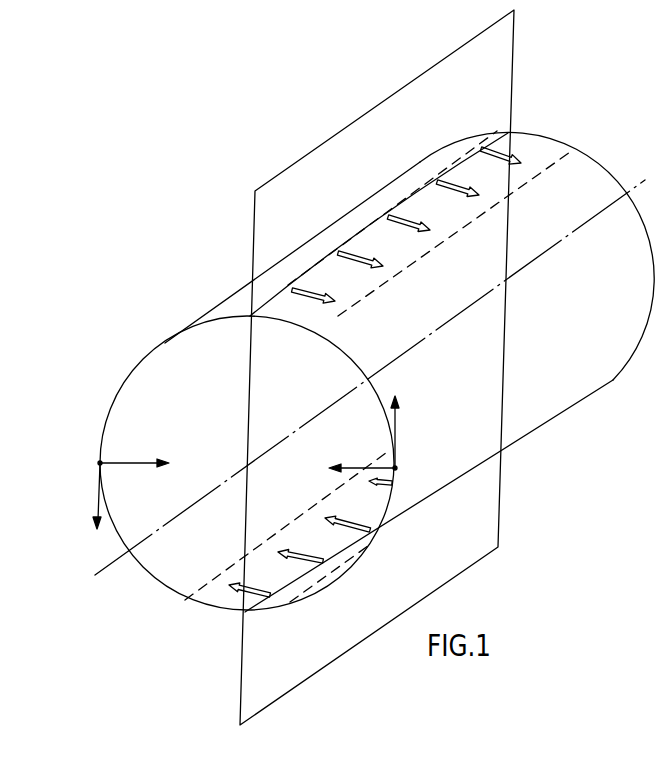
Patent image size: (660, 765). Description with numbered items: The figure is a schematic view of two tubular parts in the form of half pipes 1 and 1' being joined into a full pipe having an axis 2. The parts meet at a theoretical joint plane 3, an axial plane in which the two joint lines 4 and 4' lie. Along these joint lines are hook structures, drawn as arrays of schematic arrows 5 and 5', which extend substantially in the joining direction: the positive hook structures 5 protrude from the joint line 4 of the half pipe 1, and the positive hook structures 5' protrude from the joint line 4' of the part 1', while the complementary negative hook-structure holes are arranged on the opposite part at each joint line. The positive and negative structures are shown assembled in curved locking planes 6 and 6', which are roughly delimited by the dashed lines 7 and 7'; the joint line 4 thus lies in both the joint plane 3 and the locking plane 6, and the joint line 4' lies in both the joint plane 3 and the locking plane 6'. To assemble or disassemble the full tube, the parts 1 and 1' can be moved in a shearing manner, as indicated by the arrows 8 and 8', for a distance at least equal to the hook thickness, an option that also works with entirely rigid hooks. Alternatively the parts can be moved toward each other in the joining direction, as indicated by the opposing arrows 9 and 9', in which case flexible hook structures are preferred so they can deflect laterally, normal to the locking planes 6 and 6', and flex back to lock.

The half pipe 1 is at (537, 256).
The half pipe 1' is at (247, 463).
The axis 2 is at (100, 574).
The theoretical joint plane 3 is at (500, 64).
The joint line 4 is at (259, 576).
The joint line 4' is at (322, 282).
The positive hook structures 5 is at (302, 543).
The positive hook structures 5' is at (468, 177).
The curved locking plane 6 is at (332, 505).
The curved locking plane 6' is at (411, 254).
The dashed lines 7 is at (287, 533).
The dashed lines 7' is at (430, 215).
The arrow 8 is at (407, 433).
The arrow 8' is at (81, 494).
The arrow 9 is at (362, 451).
The arrow 9' is at (133, 445).